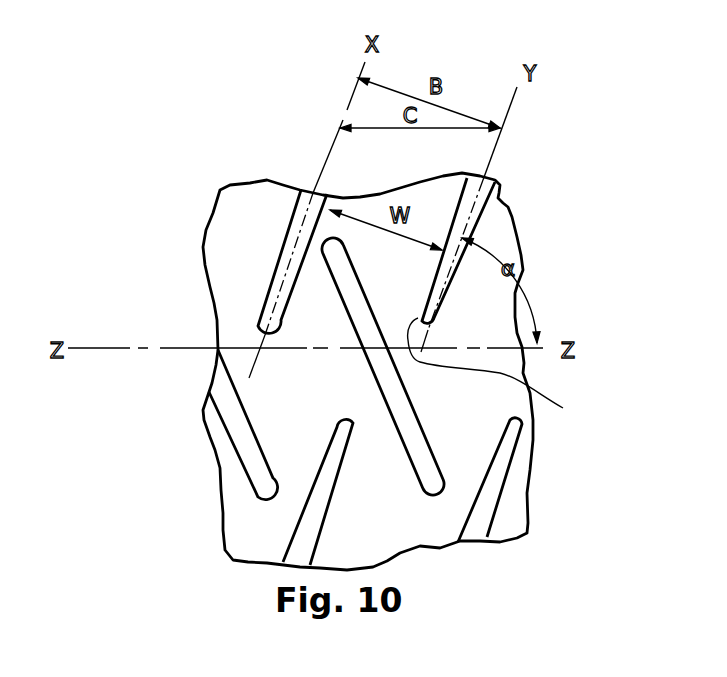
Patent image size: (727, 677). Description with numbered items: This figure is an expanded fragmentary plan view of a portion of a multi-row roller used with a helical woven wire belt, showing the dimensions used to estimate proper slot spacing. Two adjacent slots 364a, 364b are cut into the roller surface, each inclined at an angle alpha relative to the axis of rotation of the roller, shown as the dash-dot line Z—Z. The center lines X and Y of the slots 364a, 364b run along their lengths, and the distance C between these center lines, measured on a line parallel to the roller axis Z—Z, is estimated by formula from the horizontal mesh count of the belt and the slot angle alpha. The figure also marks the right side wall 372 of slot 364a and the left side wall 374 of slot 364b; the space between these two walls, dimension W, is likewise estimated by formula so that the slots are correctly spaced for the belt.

The slot 364a is at (307, 200).
The slot 364b is at (484, 197).
The right side wall 372 is at (508, 373).
The left side wall 374 is at (268, 328).